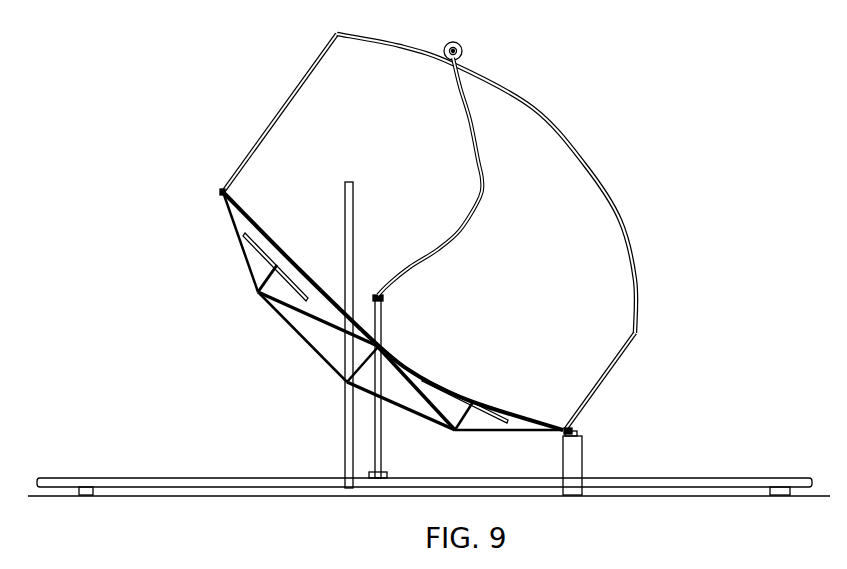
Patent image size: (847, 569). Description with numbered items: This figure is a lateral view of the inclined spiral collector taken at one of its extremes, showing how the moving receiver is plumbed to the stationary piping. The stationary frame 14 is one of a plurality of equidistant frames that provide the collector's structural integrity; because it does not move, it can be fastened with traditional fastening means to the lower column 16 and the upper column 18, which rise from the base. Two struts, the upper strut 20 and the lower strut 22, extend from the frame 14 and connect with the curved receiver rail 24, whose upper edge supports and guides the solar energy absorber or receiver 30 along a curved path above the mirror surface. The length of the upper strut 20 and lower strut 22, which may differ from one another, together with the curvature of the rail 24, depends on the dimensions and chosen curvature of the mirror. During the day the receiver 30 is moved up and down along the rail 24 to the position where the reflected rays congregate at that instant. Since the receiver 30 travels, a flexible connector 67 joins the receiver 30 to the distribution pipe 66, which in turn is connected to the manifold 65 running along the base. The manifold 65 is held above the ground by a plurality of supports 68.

The frame 14 is at (258, 292).
The lower column 16 is at (570, 452).
The upper column 18 is at (347, 440).
The upper strut 20 is at (242, 168).
The lower strut 22 is at (618, 360).
The receiver rail 24 is at (533, 108).
The receiver 30 is at (462, 46).
The manifold 65 is at (718, 482).
The distribution pipe 66 is at (377, 420).
The flexible connector 67 is at (458, 103).
The support 68 is at (86, 491).